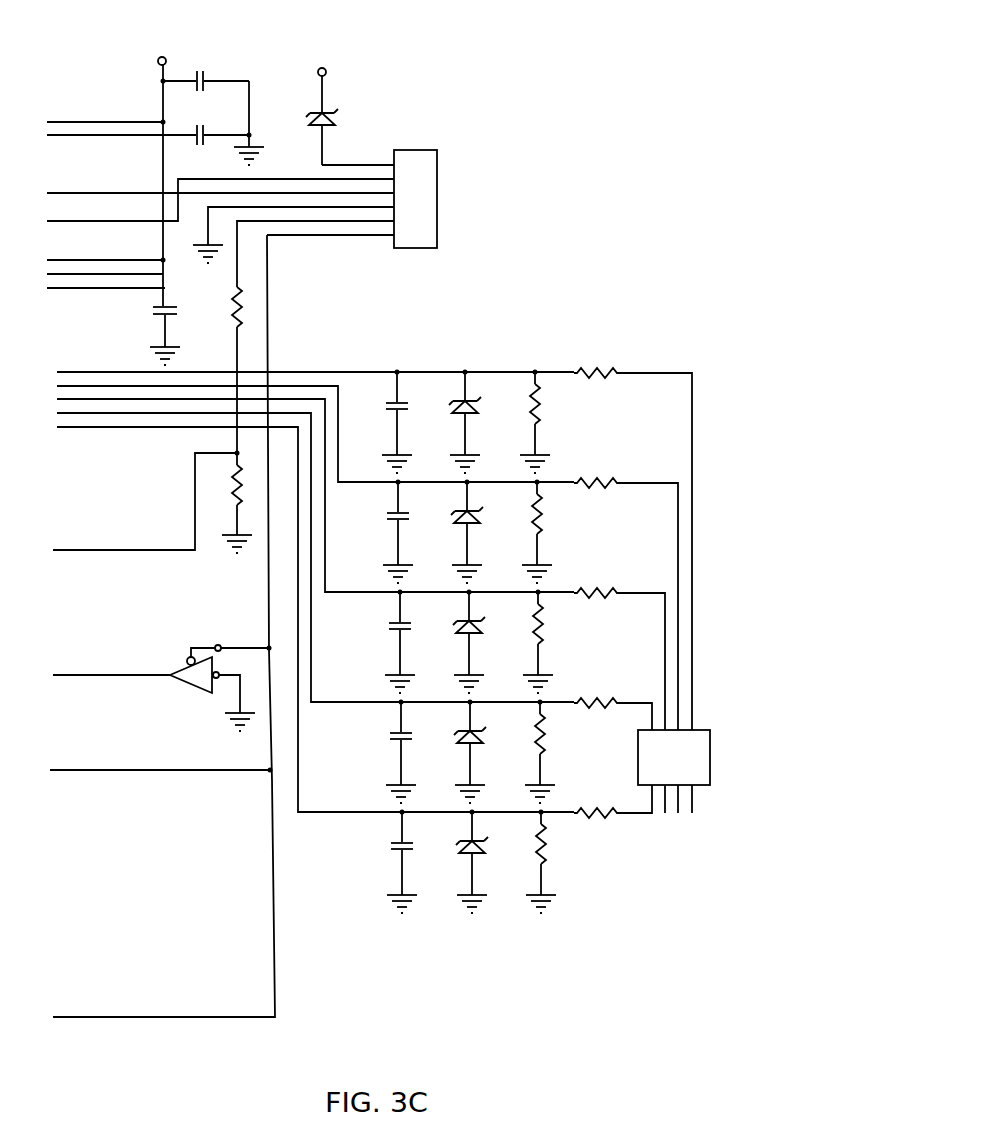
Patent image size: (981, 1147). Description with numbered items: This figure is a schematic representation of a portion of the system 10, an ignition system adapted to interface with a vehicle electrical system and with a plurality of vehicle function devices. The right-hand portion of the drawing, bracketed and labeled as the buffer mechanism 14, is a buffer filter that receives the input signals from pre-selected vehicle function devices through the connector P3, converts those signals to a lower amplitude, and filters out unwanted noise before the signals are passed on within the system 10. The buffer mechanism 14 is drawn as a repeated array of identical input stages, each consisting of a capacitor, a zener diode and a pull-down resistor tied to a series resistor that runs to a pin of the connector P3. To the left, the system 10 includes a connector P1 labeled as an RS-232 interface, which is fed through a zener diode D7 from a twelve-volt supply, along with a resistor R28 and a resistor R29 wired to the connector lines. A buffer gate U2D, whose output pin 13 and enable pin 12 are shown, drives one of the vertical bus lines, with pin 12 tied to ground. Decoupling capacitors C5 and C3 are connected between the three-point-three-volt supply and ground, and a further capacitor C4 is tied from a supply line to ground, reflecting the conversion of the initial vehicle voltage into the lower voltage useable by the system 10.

The system 10 is at (624, 111).
The buffer mechanism 14 is at (735, 832).
The buffer U2D enable pin 12 is at (234, 696).
The buffer U2D output pin 13 is at (229, 649).
The RS-232 connector P1 is at (415, 200).
The connector P3 is at (664, 771).
The buffer MC74LCX125 U2D is at (162, 682).
The zener diode D7 is at (356, 117).
The resistor R28 is at (225, 307).
The resistor R29 is at (231, 509).
The capacitor C3 is at (155, 140).
The capacitor C4 is at (176, 336).
The capacitor C5 is at (205, 103).